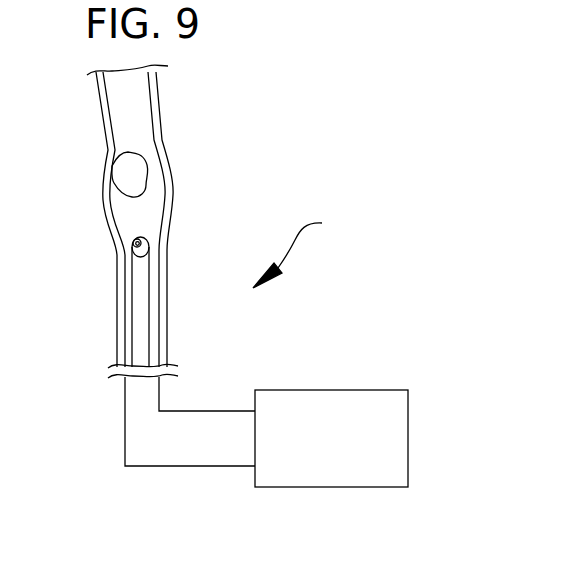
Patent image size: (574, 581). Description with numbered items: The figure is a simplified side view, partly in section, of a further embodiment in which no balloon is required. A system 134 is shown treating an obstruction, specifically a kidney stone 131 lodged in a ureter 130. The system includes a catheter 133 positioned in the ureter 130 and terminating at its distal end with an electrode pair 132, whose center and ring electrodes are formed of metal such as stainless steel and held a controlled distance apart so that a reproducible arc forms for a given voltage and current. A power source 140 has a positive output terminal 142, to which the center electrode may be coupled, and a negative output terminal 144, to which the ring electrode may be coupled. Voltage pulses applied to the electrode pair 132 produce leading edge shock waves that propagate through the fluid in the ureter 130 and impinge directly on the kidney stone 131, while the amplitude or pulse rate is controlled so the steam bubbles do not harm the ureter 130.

The ureter 130 is at (158, 110).
The kidney stone 131 is at (126, 158).
The electrode pair 132 is at (131, 250).
The catheter 133 is at (124, 288).
The system 134 is at (308, 245).
The power source 140 is at (408, 437).
The positive output terminal 142 is at (237, 411).
The negative output terminal 144 is at (237, 466).